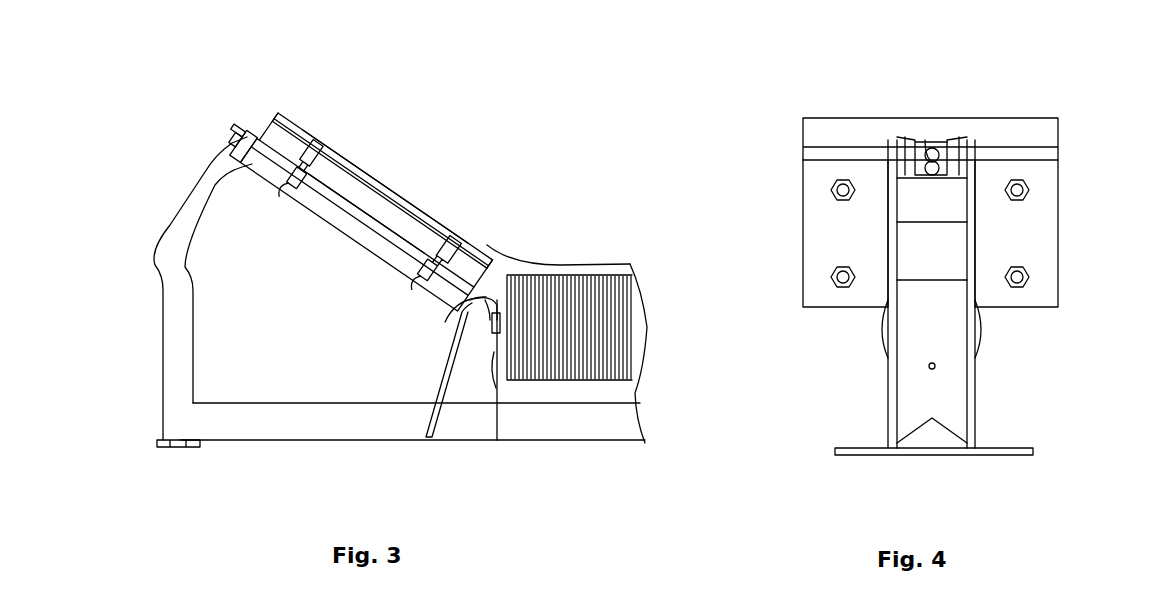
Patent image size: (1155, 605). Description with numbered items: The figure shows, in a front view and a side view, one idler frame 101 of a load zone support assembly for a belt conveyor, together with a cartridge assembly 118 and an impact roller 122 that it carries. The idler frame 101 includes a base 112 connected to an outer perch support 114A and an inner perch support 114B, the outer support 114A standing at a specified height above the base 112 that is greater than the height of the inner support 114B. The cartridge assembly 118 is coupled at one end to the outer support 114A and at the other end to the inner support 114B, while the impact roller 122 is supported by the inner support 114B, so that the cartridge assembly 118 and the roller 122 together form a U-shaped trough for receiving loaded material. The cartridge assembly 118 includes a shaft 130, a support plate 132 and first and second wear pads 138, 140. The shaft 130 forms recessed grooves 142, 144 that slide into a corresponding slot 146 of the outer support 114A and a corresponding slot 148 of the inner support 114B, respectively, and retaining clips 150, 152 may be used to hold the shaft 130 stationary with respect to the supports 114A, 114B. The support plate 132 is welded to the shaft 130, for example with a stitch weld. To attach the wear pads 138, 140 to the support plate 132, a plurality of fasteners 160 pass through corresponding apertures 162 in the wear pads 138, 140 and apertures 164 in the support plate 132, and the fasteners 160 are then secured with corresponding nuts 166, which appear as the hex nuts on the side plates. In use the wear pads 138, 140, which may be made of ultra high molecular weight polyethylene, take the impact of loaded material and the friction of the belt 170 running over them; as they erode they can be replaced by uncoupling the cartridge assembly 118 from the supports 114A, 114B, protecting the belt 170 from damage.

In FIG. 3, the idler frame 101 is at (228, 440).
In FIG. 4, the idler frame 101 is at (1025, 460).
In FIG. 3, the base 112 is at (322, 435).
In FIG. 4, the base 112 is at (865, 452).
In FIG. 3, the outer perch support 114A is at (165, 347).
In FIG. 4, the outer perch support 114A is at (905, 380).
In FIG. 3, the inner perch support 114B is at (432, 420).
In FIG. 3, the cartridge assembly 118 is at (290, 100).
In FIG. 4, the cartridge assembly 118 is at (1045, 110).
In FIG. 3, the impact roller 122 is at (565, 272).
In FIG. 4, the impact roller 122 is at (983, 335).
In FIG. 3, the shaft 130 is at (296, 195).
In FIG. 4, the shaft 130 is at (932, 140).
In FIG. 3, the support plate 132 is at (378, 228).
In FIG. 4, the support plate 132 is at (1040, 155).
In FIG. 3, the first wear pad 138 is at (348, 185).
In FIG. 4, the first wear pad 138 is at (1005, 130).
In FIG. 4, the second wear pad 140 is at (830, 132).
In FIG. 3, the recessed groove 142 is at (245, 165).
In FIG. 3, the recessed groove 144 is at (455, 335).
In FIG. 3, the slot 146 is at (238, 135).
In FIG. 4, the slot 146 is at (925, 140).
In FIG. 3, the slot 148 is at (497, 400).
In FIG. 3, the retaining clip 150 is at (238, 145).
In FIG. 4, the retaining clip 150 is at (940, 160).
In FIG. 3, the retaining clip 152 is at (498, 300).
In FIG. 3, the fastener 160 is at (282, 118).
In FIG. 3, the aperture 162 is at (318, 140).
In FIG. 3, the aperture 164 is at (318, 210).
In FIG. 3, the nut 166 is at (290, 190).
In FIG. 4, the nut 166 is at (832, 195).
In FIG. 3, the belt 170 is at (380, 160).